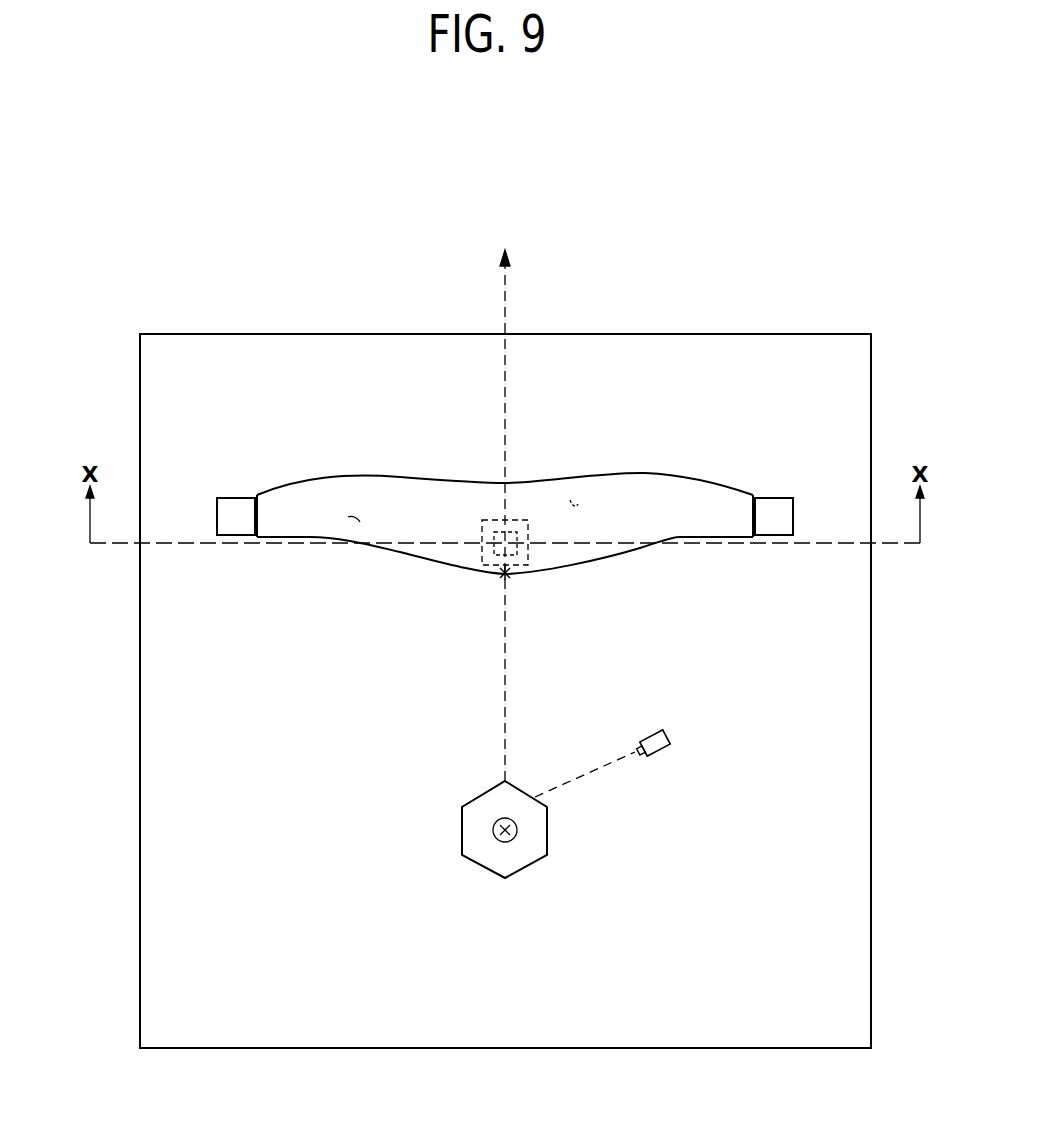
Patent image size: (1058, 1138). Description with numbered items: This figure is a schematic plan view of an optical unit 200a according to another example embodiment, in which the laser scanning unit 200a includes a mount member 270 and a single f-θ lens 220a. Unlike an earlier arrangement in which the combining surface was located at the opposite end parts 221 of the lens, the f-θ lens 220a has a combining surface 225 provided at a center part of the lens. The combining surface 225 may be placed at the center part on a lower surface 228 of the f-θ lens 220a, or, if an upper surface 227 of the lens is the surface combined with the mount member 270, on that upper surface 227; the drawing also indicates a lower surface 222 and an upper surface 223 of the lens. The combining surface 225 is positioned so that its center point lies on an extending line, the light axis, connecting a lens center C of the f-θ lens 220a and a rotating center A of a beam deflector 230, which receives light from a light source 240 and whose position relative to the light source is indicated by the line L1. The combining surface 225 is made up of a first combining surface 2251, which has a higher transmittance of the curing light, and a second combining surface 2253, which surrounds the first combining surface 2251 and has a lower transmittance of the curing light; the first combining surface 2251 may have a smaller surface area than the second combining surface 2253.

The optical unit 200a is at (826, 321).
The mount member 270 is at (146, 828).
The f-θ lens 220a is at (505, 519).
The end parts 221 is at (238, 524).
The lower surface of magnet 222 is at (620, 552).
The upper surface of magnet 223 is at (442, 478).
The combining surface 225 is at (459, 600).
The first combining surface 2251 is at (500, 555).
The second combining surface 2253 is at (482, 546).
The upper surface 227 is at (348, 518).
The lower surface 228 is at (572, 500).
The lens center C is at (508, 575).
The beam deflector 230 is at (499, 867).
The rotating center A is at (514, 834).
The distance line L1 is at (588, 774).
The light source 240 is at (664, 752).